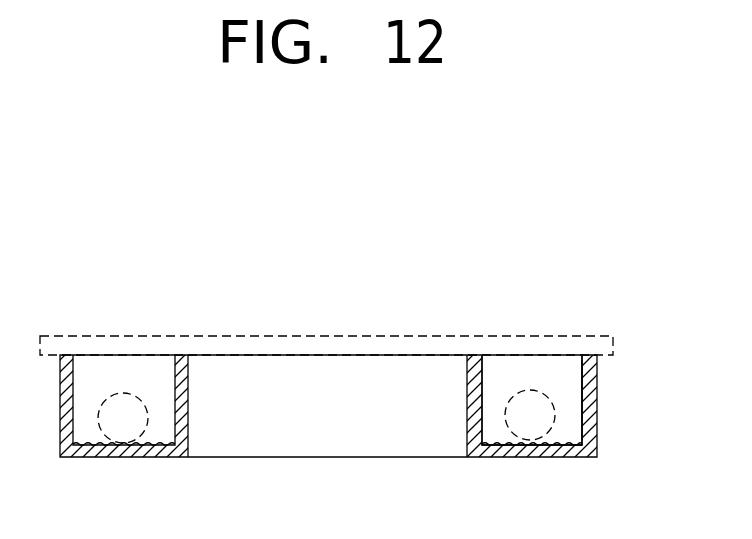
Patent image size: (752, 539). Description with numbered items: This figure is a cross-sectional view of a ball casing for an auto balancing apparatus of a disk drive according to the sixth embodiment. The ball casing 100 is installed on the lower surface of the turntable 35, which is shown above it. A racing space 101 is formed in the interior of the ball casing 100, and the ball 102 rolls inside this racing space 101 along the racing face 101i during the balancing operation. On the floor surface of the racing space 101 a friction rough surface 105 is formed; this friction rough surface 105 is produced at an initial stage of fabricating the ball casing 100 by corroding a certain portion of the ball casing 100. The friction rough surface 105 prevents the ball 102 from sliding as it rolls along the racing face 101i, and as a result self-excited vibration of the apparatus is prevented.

The turntable 35 is at (353, 341).
The ball casing 100 is at (592, 421).
The racing space 101 is at (532, 370).
The racing face 101i is at (585, 378).
The ball 102 is at (115, 430).
The friction rough surface 105 is at (575, 441).